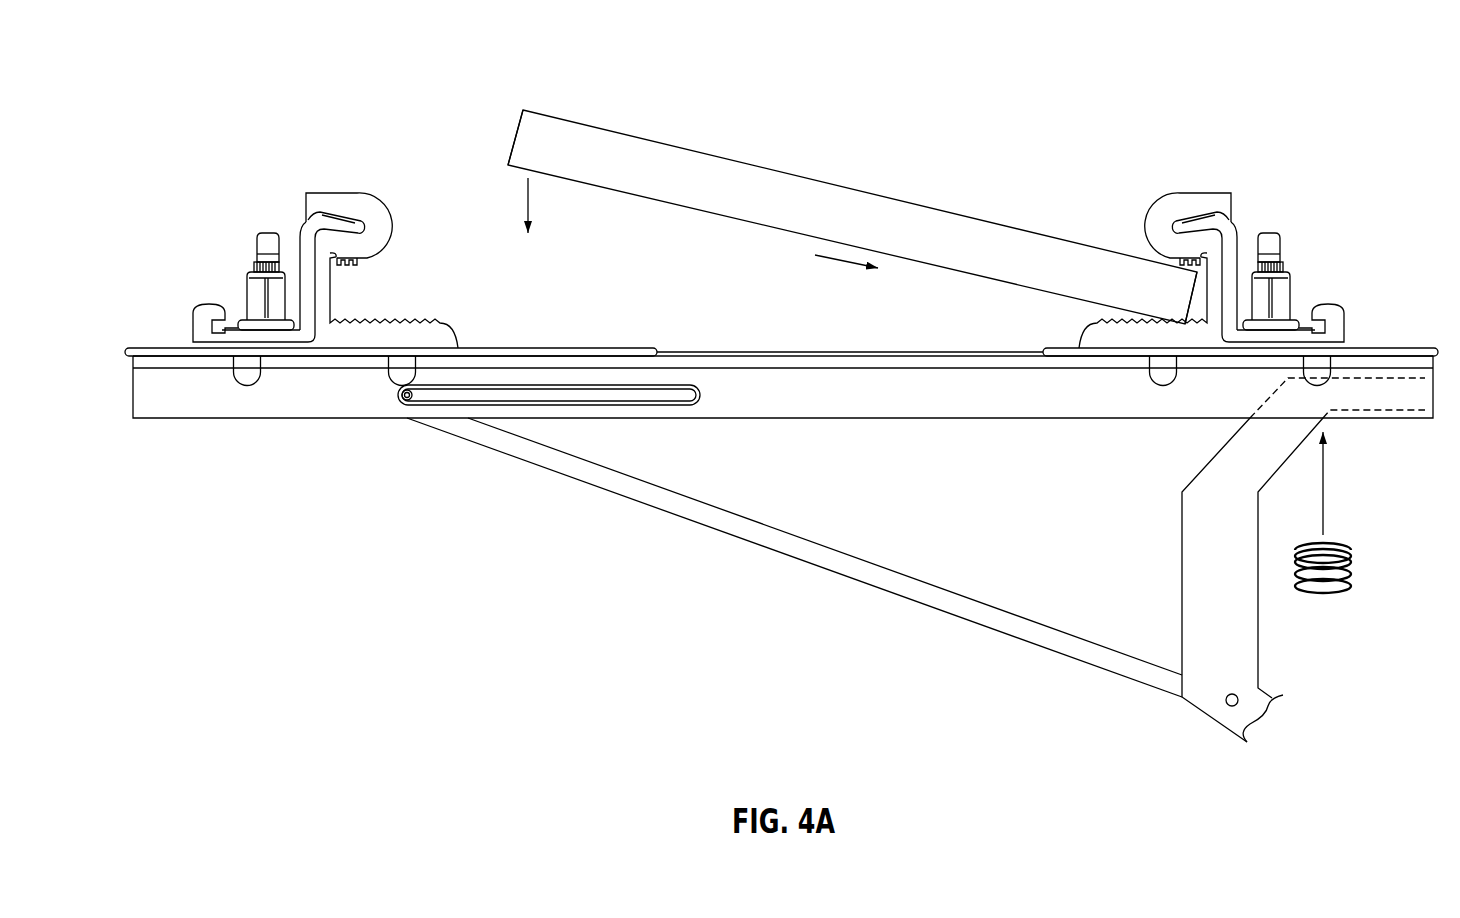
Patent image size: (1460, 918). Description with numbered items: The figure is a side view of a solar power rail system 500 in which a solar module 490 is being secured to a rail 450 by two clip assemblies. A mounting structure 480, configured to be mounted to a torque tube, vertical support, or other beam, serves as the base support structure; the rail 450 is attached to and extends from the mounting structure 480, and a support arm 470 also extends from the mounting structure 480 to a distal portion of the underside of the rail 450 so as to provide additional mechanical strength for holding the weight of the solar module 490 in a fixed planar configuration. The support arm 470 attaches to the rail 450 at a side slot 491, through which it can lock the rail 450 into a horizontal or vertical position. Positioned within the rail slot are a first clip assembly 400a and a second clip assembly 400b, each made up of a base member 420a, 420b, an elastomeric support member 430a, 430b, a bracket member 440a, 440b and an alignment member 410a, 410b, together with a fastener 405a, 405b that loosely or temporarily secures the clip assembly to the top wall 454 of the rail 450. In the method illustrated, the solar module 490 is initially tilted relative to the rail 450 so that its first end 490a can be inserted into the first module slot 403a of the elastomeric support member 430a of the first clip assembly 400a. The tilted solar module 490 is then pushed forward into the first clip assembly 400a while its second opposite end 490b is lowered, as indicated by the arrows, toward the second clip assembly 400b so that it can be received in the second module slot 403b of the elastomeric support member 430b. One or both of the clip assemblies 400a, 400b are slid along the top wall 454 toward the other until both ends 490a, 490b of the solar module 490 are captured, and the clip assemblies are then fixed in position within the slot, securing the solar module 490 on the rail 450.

The first clip assembly 400a is at (1358, 154).
The second clip assembly 400b is at (180, 155).
The first module slot 403a is at (1194, 305).
The second module slot 403b is at (347, 302).
The fastener 405a is at (1270, 232).
The fastener 405b is at (267, 232).
The alignment member 410a is at (1287, 275).
The alignment member 410b is at (250, 275).
The base member 420a is at (1381, 347).
The base member 420b is at (153, 347).
The elastomeric support member 430a is at (1190, 201).
The elastomeric support member 430b is at (346, 200).
The bracket member 440a is at (1233, 221).
The bracket member 440b is at (305, 221).
The rail 450 is at (958, 416).
The top wall 454 is at (703, 350).
The support arm 470 is at (805, 552).
The mounting structure 480 is at (1228, 615).
The solar module 490 is at (859, 192).
The first end 490a is at (1185, 303).
The second opposite end 490b is at (525, 110).
The side slot 491 is at (645, 397).
The solar power rail system 500 is at (563, 578).